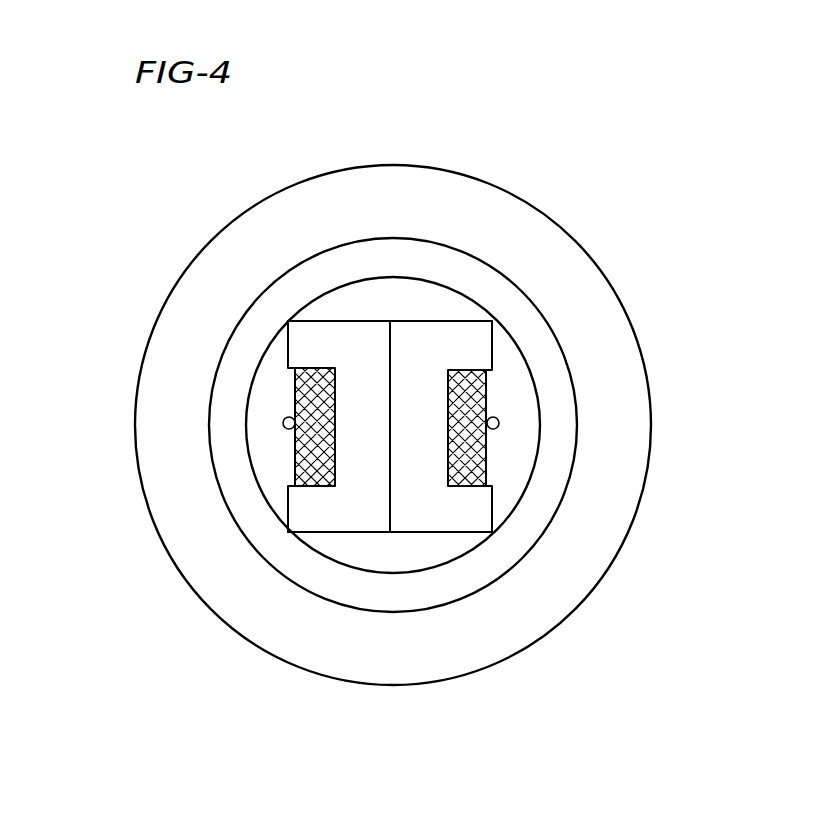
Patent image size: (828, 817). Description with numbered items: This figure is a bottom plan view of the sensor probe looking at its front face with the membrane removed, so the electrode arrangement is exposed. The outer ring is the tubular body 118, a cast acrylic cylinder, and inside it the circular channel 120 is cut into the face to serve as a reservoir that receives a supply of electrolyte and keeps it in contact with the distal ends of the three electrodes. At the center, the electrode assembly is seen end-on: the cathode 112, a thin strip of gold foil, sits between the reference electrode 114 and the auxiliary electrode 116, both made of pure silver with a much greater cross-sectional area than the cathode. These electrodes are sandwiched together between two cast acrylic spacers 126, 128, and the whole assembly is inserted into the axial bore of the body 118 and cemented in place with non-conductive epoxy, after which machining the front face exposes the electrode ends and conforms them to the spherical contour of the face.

The cathode 112 is at (392, 512).
The reference electrode 114 is at (483, 470).
The auxiliary electrode 116 is at (297, 458).
The tubular body 118 is at (617, 300).
The circular channel 120 is at (518, 533).
The cast acrylic spacer 126 is at (322, 532).
The cast acrylic spacer 128 is at (423, 321).